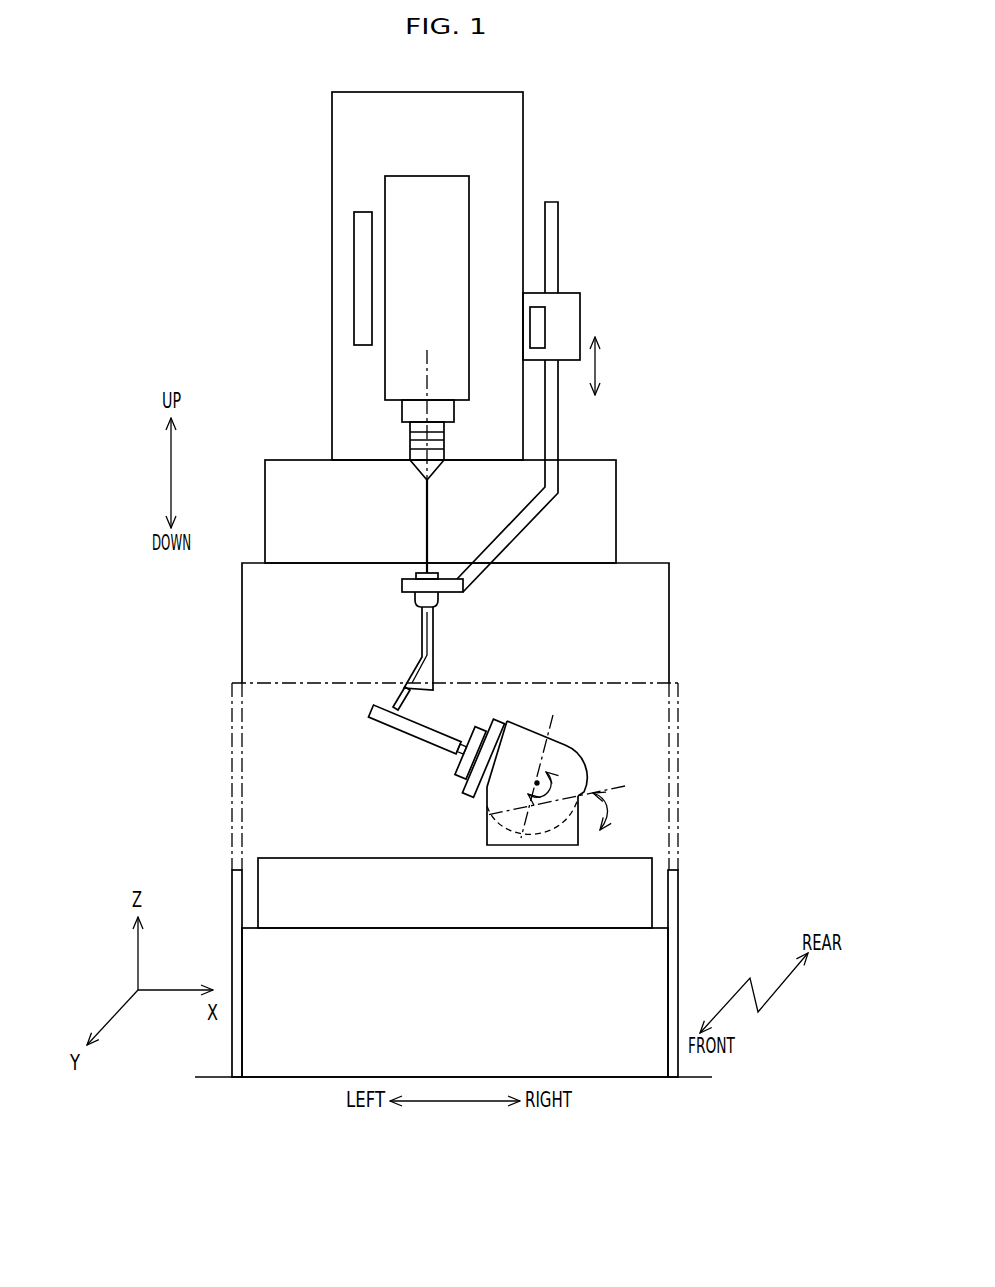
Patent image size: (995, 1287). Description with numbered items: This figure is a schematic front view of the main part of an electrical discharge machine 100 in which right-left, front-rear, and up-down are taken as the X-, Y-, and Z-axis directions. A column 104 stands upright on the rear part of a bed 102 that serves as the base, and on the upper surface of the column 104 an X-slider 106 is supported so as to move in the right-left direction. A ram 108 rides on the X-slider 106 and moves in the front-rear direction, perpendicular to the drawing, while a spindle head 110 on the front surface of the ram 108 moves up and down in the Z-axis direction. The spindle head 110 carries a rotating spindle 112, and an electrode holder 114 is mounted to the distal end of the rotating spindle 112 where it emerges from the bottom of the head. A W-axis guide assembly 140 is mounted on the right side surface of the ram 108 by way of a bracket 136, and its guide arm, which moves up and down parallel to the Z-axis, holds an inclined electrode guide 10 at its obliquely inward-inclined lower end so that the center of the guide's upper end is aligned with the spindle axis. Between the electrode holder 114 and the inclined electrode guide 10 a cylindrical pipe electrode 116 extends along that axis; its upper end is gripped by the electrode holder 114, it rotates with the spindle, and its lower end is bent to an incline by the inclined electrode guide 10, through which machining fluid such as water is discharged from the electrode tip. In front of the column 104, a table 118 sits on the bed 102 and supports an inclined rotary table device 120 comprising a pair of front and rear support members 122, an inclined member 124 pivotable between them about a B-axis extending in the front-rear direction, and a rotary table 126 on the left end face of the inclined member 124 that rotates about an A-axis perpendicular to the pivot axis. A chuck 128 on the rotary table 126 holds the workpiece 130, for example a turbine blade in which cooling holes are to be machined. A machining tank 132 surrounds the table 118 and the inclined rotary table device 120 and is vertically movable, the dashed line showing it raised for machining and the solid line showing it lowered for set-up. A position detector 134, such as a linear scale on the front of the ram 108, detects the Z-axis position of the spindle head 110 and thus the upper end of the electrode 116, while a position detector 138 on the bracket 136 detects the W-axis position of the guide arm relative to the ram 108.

The electrical discharge machine 100 is at (708, 167).
The inclined electrode guide 10 is at (333, 696).
The bed 102 is at (630, 977).
The column 104 is at (669, 588).
The X-slider 106 is at (616, 485).
The ram 108 is at (523, 168).
The spindle head 110 is at (385, 197).
The rotating spindle 112 is at (402, 412).
The electrode holder 114 is at (410, 450).
The electrode 116 is at (430, 513).
The table 118 is at (630, 907).
The inclined rotary table device 120 is at (642, 730).
The support members 122 is at (486, 828).
The inclined member 124 is at (572, 748).
The rotary table 126 is at (470, 792).
The chuck 128 is at (455, 768).
The workpiece 130 is at (373, 718).
The machining tank 132 is at (232, 895).
The position detector 134 is at (354, 297).
The bracket 136 is at (580, 316).
The position detector 138 is at (545, 313).
The W-axis guide assembly 140 is at (608, 455).